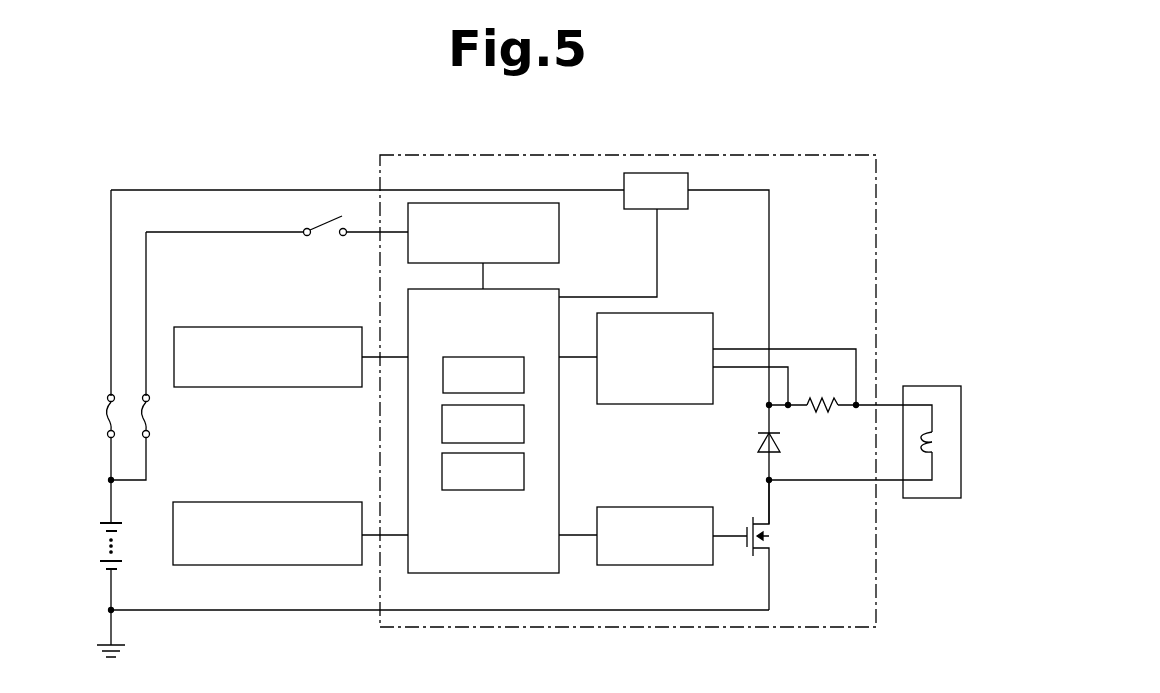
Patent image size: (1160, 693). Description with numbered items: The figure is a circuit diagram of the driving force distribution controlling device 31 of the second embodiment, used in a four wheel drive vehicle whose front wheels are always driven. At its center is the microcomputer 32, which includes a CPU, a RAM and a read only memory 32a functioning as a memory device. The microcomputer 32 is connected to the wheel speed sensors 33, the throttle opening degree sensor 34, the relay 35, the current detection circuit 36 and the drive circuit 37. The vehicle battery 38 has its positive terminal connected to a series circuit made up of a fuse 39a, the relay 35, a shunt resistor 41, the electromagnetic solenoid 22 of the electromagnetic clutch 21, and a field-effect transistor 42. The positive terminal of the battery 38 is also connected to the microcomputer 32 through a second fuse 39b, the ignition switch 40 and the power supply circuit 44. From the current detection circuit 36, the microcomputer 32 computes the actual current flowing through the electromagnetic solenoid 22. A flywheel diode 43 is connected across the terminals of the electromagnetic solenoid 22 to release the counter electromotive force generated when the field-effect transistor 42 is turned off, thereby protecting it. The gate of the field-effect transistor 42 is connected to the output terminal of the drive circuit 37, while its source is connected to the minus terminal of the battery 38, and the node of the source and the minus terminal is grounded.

The electromagnetic clutch 21 is at (945, 386).
The electromagnetic solenoid 22 is at (934, 455).
The driving force distribution controlling device 31 is at (800, 155).
The microcomputer 32 is at (468, 431).
The read only memory 32a is at (425, 423).
The wheel speed sensors 33 is at (222, 327).
The throttle opening degree sensor 34 is at (215, 502).
The relay 35 is at (667, 173).
The current detection circuit 36 is at (697, 313).
The drive circuit 37 is at (690, 507).
The battery 38 is at (102, 519).
The fuse 39a is at (108, 417).
The fuse 39b is at (148, 418).
The ignition switch 40 is at (322, 218).
The shunt resistor 41 is at (823, 410).
The field-effect transistor 42 is at (755, 549).
The flywheel diode 43 is at (758, 438).
The power supply circuit 44 is at (559, 233).